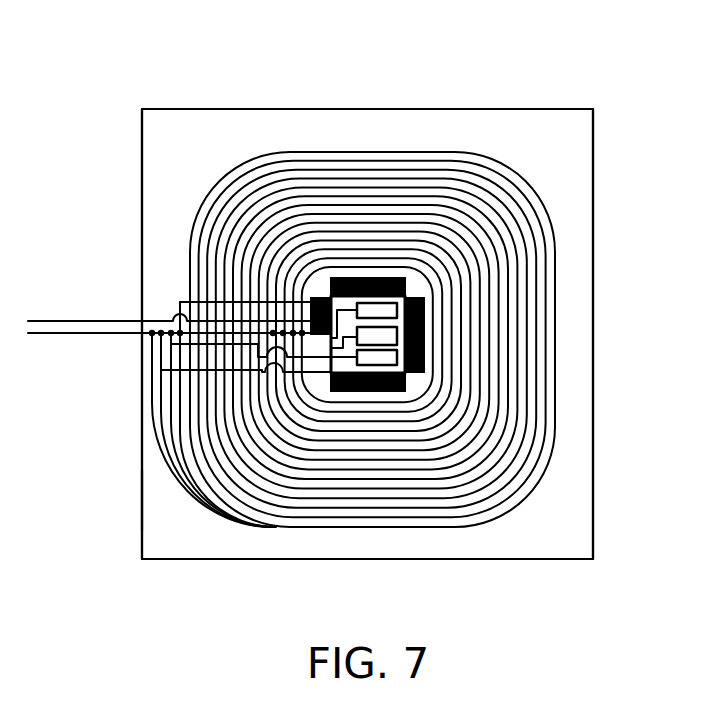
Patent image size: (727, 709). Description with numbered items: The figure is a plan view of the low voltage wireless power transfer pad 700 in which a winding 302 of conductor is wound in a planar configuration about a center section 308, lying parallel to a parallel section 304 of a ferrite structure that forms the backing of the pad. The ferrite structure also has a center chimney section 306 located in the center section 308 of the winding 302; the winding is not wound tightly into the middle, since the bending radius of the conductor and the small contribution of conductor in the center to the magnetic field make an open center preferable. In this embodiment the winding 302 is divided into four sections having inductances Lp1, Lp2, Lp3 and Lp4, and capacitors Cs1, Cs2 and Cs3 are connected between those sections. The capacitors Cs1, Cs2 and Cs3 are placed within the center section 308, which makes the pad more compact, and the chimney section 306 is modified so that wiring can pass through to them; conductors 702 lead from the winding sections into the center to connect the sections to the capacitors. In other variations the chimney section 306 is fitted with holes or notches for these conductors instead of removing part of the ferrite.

The wireless power transfer coil assembly 700 is at (100, 108).
The winding 302 is at (470, 153).
The parallel section of the ferrite structure 304 is at (143, 492).
The center chimney section 306 is at (328, 392).
The center section 308 is at (400, 347).
The feed wires 702 is at (52, 303).
The inductance of first winding section Lp1 is at (552, 223).
The inductance of second winding section Lp2 is at (546, 257).
The inductance of third winding section Lp3 is at (538, 292).
The inductance of fourth winding section Lp4 is at (527, 327).
The capacitor Cs1 is at (377, 357).
The capacitor Cs2 is at (377, 333).
The capacitor Cs3 is at (378, 312).